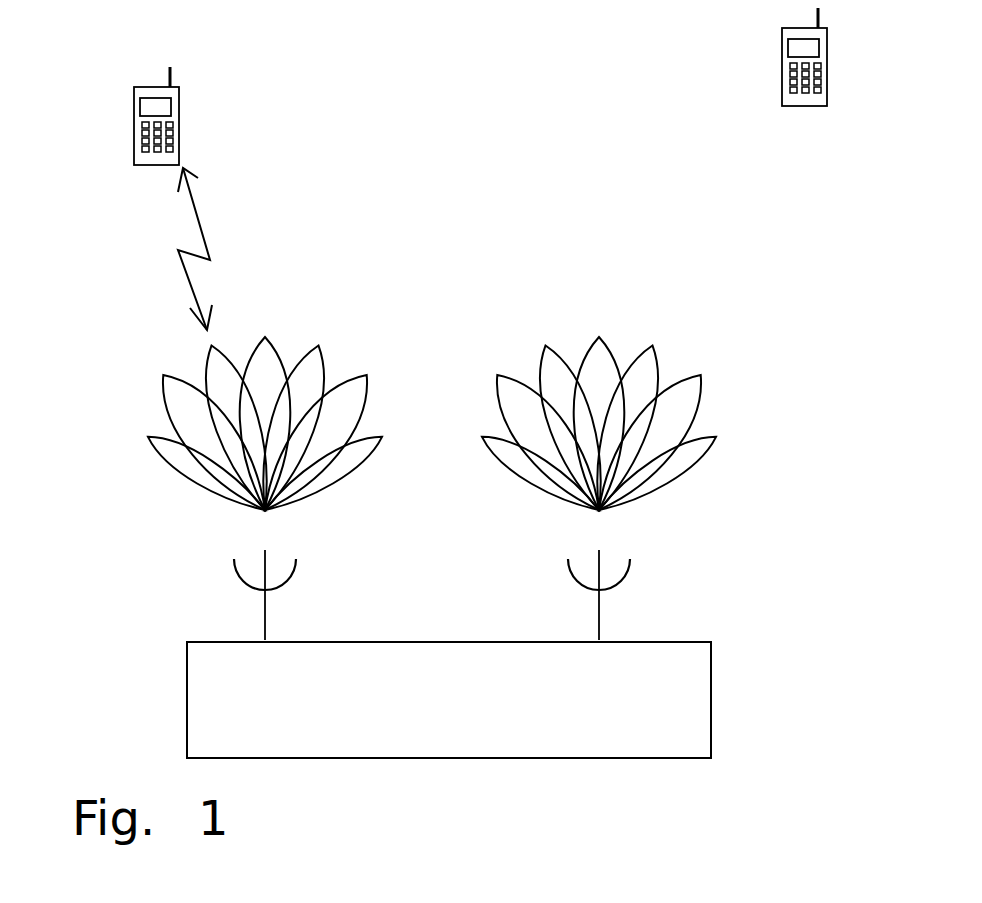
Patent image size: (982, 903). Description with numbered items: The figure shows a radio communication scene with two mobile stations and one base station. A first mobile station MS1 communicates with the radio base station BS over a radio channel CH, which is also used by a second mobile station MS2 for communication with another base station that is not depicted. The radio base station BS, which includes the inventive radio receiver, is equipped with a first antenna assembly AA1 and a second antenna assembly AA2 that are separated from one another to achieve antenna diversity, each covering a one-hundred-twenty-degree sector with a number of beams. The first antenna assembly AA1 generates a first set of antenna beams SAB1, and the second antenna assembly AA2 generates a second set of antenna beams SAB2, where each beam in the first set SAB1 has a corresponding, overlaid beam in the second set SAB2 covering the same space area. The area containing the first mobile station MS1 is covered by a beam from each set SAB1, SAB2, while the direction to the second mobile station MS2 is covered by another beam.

The first mobile station MS1 is at (143, 163).
The second mobile station MS2 is at (808, 106).
The radio channel CH is at (197, 213).
The first set of antenna beams SAB1 is at (130, 417).
The second set of antenna beams SAB2 is at (738, 400).
The first antenna assembly AA1 is at (263, 622).
The second antenna assembly AA2 is at (600, 614).
The radio base station BS is at (680, 699).